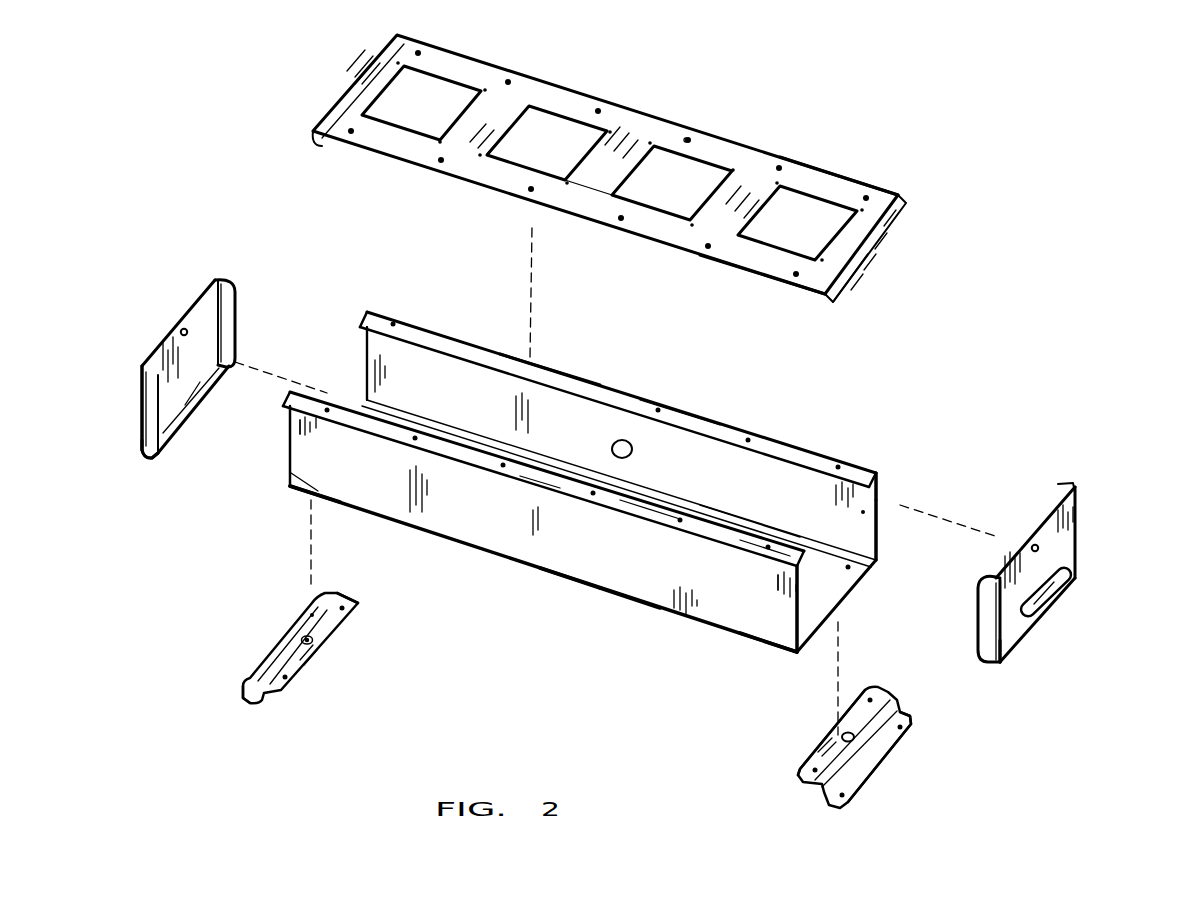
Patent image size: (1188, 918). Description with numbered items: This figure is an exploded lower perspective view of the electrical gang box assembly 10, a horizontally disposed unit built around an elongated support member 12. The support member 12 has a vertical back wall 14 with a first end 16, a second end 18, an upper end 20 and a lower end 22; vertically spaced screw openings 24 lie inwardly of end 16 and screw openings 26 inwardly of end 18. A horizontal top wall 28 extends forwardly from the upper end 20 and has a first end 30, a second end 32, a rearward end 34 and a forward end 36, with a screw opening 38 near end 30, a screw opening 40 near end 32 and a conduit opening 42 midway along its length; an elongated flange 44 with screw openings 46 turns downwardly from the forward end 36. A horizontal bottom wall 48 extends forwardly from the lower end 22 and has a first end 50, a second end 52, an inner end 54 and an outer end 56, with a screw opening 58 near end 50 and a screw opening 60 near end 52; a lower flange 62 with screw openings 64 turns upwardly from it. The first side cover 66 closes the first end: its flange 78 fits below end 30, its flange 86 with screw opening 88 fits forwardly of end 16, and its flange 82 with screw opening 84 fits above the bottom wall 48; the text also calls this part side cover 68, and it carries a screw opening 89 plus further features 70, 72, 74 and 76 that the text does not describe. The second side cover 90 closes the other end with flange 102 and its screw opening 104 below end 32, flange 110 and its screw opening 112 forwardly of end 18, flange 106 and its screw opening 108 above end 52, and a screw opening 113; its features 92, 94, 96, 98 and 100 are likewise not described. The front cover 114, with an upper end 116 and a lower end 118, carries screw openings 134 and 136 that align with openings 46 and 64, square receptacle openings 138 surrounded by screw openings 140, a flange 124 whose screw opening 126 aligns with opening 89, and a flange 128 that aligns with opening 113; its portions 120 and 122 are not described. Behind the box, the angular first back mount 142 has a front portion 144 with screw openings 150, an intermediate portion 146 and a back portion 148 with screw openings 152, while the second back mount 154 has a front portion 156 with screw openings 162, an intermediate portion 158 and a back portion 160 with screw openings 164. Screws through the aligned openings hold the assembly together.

The electrical gang box assembly 10 is at (993, 356).
The support member 12 is at (849, 451).
The back wall 14 is at (683, 506).
The first end 16 is at (855, 589).
The second end 18 is at (378, 416).
The upper end 20 is at (764, 517).
The lower end 22 is at (796, 663).
The screw openings 24 is at (876, 562).
The screw openings 26 is at (396, 412).
The top wall 28 is at (674, 446).
The first end 30 is at (879, 497).
The second end 32 is at (373, 357).
The inner end 34 is at (560, 458).
The outer end 36 is at (878, 478).
The screw opening 38 is at (860, 514).
The screw opening 40 is at (420, 320).
The opening 42 is at (623, 438).
The flange 44 is at (551, 372).
The screw openings 46 is at (483, 352).
The bottom wall 48 is at (634, 573).
The first end 50 is at (794, 630).
The second end 52 is at (311, 478).
The inner end 54 is at (568, 581).
The outer end 56 is at (540, 488).
The screw opening 58 is at (788, 607).
The screw opening 60 is at (303, 452).
The flange 62 is at (650, 511).
The screw openings 64 is at (773, 548).
The first side cover 66 is at (1077, 481).
The side cover 68 is at (1063, 542).
The end cap edge 70 is at (1077, 513).
The end cap bottom edge 72 is at (1004, 641).
The slot 74 is at (1070, 583).
The end cap inner surface 76 is at (1036, 528).
The flange 78 is at (1052, 492).
The flange 82 is at (990, 653).
The screw opening 84 is at (988, 619).
The flange 86 is at (1048, 619).
The screw opening 88 is at (1067, 583).
The screw opening 89 is at (1041, 549).
The second side cover 90 is at (192, 281).
The axis 92 is at (206, 341).
The end cap top edge 94 is at (216, 278).
The end cap flange 96 is at (140, 418).
The bottom flange bend 98 is at (196, 398).
The end cap plate 100 is at (178, 310).
The flange 102 is at (224, 304).
The screw opening 104 is at (226, 323).
The flange 106 is at (148, 447).
The screw opening 108 is at (152, 413).
The flange 110 is at (216, 381).
The screw opening 112 is at (184, 416).
The screw opening 113 is at (180, 331).
The front cover 114 is at (729, 122).
The upper end 116 is at (831, 175).
The lower end 118 is at (761, 274).
The plate right flange 120 is at (877, 217).
The plate left end 122 is at (371, 78).
The flange 124 is at (893, 226).
The screw opening 126 is at (868, 254).
The flange 128 is at (318, 146).
The screw openings 134 is at (686, 140).
The screw openings 136 is at (619, 218).
The receptacle opening 138 is at (441, 82).
The screw openings 140 is at (523, 107).
The first back mount 142 is at (800, 748).
The front portion 144 is at (806, 778).
The intermediate portion 146 is at (826, 799).
The back portion 148 is at (868, 764).
The screw openings 150 is at (871, 700).
The screw openings 152 is at (914, 728).
The second back mount 154 is at (284, 627).
The front portion 156 is at (328, 628).
The intermediate portion 158 is at (264, 690).
The back portion 160 is at (248, 699).
The screw openings 162 is at (358, 604).
The screw openings 164 is at (254, 684).